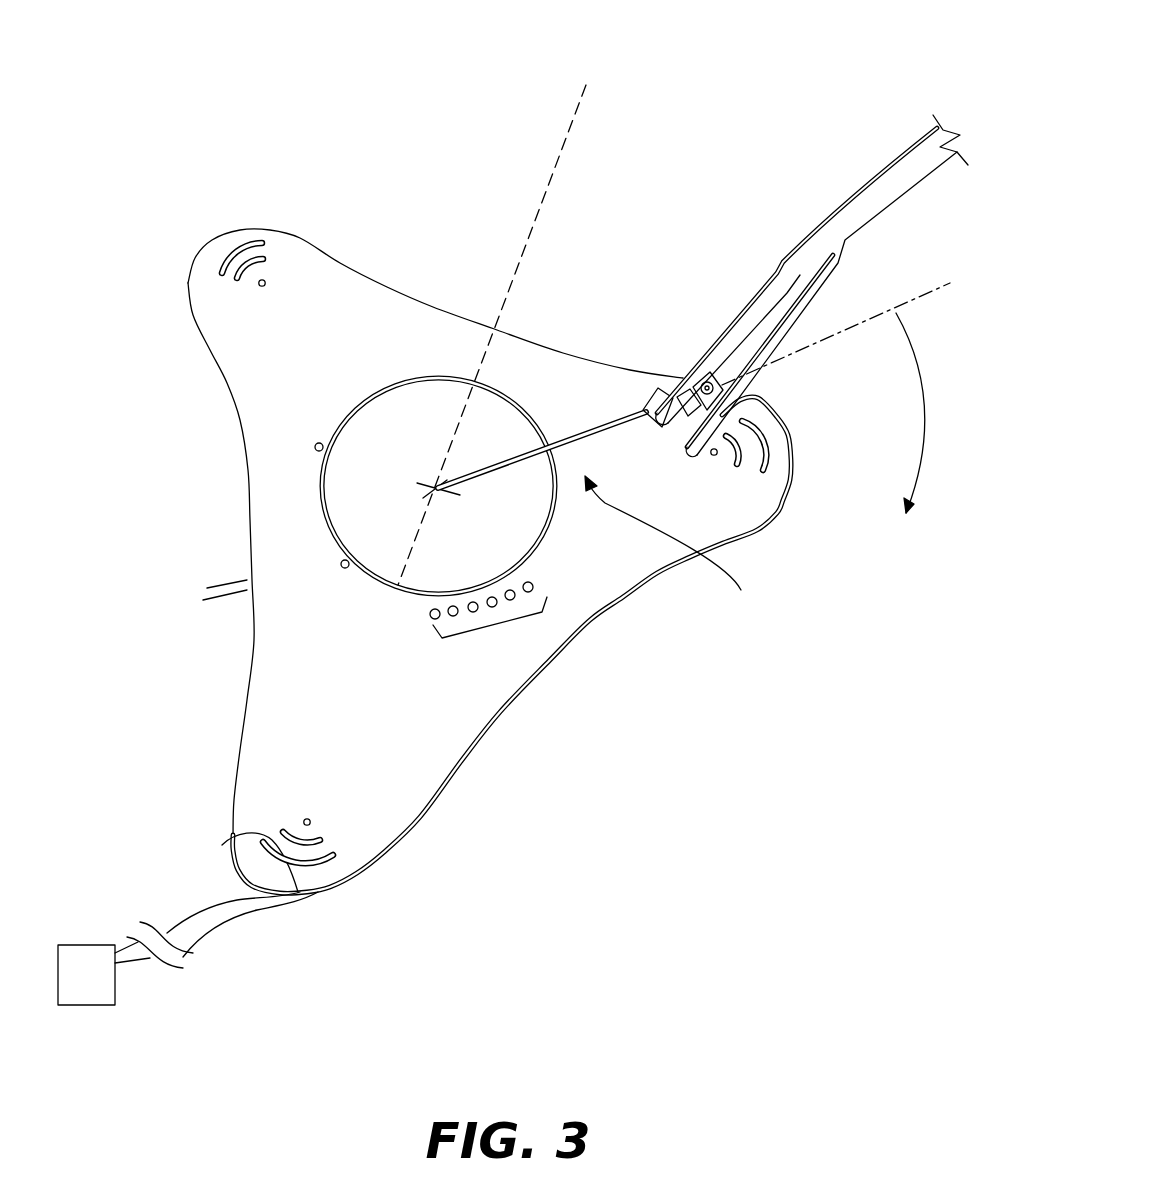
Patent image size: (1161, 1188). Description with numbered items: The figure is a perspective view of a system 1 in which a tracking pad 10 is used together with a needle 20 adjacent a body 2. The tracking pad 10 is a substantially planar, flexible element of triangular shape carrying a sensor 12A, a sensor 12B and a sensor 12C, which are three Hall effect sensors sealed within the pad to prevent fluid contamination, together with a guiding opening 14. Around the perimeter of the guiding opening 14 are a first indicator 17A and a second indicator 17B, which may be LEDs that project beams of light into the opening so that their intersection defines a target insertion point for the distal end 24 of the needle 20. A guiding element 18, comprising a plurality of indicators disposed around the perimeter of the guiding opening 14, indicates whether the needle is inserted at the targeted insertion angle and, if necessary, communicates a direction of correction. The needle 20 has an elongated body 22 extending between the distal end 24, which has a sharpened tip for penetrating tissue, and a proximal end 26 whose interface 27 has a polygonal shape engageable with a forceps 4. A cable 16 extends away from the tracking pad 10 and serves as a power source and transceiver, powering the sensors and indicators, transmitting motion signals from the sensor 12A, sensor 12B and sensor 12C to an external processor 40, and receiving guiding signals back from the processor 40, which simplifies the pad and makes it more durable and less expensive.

The system 1 is at (725, 90).
The body 2 is at (255, 613).
The forceps 4 is at (795, 295).
The tracking pad 10 is at (363, 305).
The sensor 12A is at (255, 263).
The sensor 12B is at (762, 435).
The sensor 12C is at (222, 845).
The guiding opening 14 is at (432, 398).
The cable 16 is at (232, 905).
The first indicator 17A is at (343, 570).
The second indicator 17B is at (314, 447).
The guiding element 18 is at (483, 628).
The needle 20 is at (674, 548).
The elongated body 22 is at (555, 443).
The distal end 24 is at (436, 487).
The proximal end 26 is at (648, 405).
The interface 27 is at (742, 416).
The processor 40 is at (71, 988).